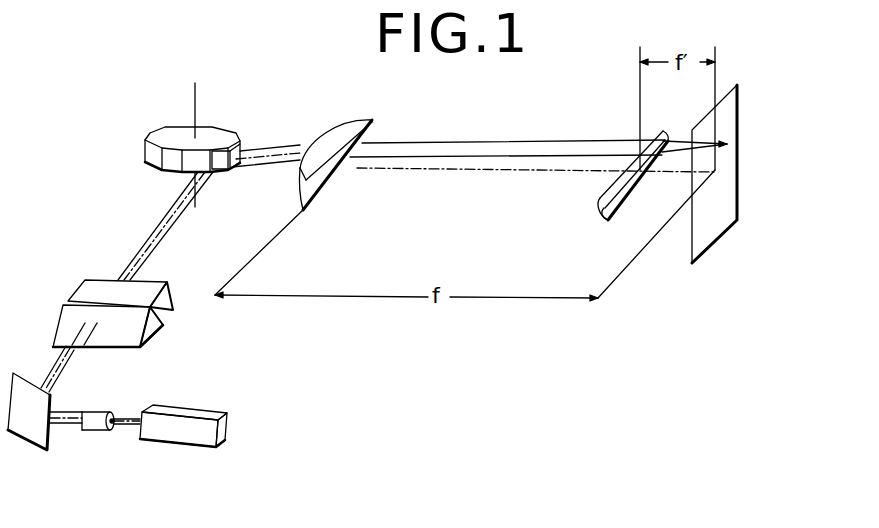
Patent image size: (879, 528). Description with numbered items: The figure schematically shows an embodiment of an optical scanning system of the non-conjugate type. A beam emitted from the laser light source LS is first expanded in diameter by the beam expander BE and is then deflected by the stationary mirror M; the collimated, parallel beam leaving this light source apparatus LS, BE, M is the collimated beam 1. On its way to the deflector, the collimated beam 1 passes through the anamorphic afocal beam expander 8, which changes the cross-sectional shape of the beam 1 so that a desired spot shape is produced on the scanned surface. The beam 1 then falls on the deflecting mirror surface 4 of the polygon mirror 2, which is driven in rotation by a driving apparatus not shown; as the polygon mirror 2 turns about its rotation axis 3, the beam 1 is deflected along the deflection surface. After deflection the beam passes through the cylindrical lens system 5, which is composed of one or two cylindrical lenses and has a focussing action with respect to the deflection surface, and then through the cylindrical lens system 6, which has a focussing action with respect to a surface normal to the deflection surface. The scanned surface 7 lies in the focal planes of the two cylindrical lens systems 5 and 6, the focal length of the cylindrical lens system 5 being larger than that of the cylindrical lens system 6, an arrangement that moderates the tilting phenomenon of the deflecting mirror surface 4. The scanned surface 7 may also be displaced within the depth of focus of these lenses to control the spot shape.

The collimated beam 1 is at (160, 237).
The polygon mirror 2 is at (221, 142).
The rotation axis 3 is at (197, 93).
The deflecting mirror surface 4 is at (212, 170).
The cylindrical lens system 5 is at (337, 142).
The cylindrical lens system 6 is at (615, 200).
The scanned surface 7 is at (697, 243).
The anamorphic afocal beam expander 8 is at (129, 317).
The stationary mirror M is at (23, 428).
The beam expander BE is at (97, 424).
The laser light source LS is at (177, 438).